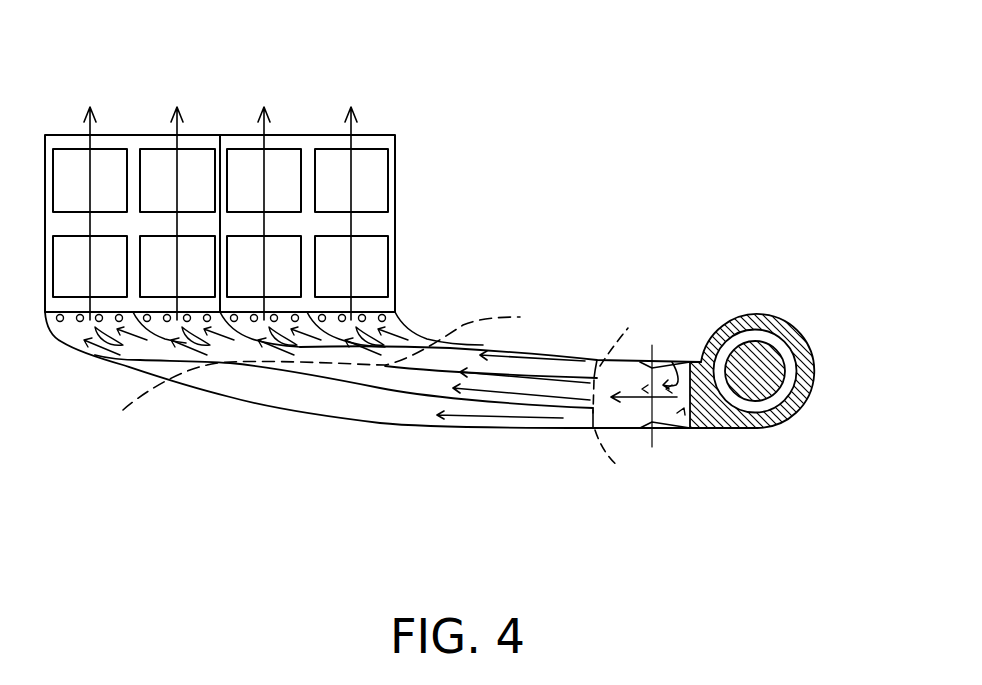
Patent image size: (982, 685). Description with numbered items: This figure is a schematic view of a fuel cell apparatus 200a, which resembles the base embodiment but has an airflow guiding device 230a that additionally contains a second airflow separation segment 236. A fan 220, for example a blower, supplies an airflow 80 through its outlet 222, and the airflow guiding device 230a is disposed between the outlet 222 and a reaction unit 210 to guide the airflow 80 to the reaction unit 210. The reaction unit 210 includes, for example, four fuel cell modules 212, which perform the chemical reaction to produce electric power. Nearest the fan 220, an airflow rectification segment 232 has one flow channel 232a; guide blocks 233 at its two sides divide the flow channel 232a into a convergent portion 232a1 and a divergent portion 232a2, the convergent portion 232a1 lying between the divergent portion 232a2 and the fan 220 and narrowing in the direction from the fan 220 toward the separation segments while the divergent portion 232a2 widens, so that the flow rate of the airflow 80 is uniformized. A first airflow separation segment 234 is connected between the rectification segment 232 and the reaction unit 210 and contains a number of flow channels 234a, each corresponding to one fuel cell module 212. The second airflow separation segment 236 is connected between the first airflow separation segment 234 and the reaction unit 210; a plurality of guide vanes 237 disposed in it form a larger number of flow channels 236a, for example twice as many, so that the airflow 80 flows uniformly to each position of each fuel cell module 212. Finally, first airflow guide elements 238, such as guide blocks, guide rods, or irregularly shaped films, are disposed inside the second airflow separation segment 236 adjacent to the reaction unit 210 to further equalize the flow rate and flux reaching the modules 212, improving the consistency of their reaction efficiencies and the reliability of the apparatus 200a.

The fuel cell apparatus 200a is at (900, 533).
The reaction unit 210 is at (363, 56).
The fuel cell modules 212 is at (395, 105).
The fan 220 is at (812, 372).
The outlet 222 is at (748, 366).
The airflow guiding device 230a is at (401, 405).
The airflow rectification segment 232 is at (637, 457).
The flow channel 232a is at (748, 320).
The convergent portion 232a1 is at (683, 362).
The divergent portion 232a2 is at (673, 362).
The guide blocks 233 is at (656, 429).
The first airflow separation segment 234 is at (373, 448).
The flow channels 234a is at (617, 365).
The second airflow separation segment 236 is at (116, 394).
The flow channels 236a is at (415, 348).
The guide vanes 237 is at (84, 339).
The first airflow guide elements 238 is at (59, 323).
The airflow 80 is at (635, 393).